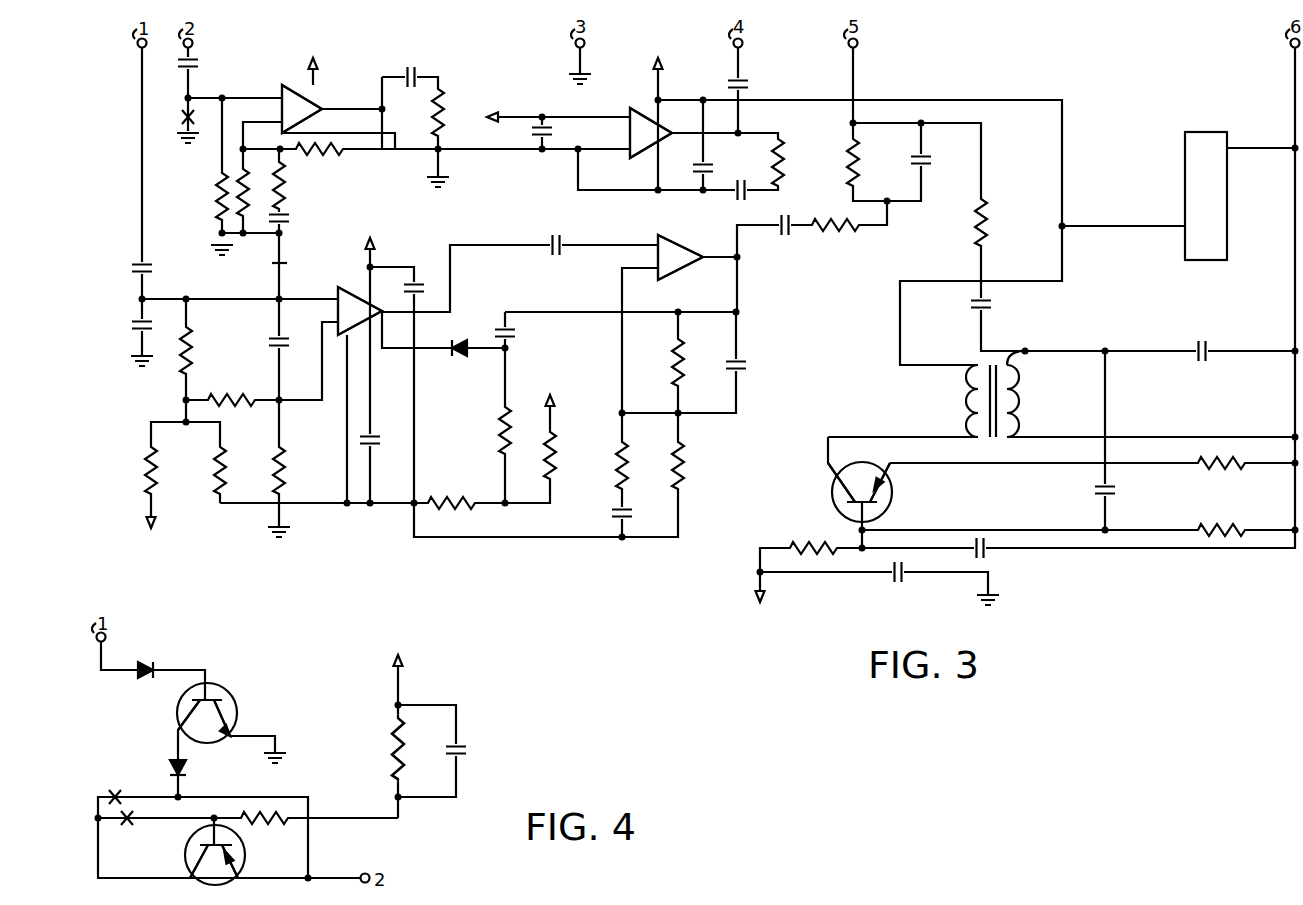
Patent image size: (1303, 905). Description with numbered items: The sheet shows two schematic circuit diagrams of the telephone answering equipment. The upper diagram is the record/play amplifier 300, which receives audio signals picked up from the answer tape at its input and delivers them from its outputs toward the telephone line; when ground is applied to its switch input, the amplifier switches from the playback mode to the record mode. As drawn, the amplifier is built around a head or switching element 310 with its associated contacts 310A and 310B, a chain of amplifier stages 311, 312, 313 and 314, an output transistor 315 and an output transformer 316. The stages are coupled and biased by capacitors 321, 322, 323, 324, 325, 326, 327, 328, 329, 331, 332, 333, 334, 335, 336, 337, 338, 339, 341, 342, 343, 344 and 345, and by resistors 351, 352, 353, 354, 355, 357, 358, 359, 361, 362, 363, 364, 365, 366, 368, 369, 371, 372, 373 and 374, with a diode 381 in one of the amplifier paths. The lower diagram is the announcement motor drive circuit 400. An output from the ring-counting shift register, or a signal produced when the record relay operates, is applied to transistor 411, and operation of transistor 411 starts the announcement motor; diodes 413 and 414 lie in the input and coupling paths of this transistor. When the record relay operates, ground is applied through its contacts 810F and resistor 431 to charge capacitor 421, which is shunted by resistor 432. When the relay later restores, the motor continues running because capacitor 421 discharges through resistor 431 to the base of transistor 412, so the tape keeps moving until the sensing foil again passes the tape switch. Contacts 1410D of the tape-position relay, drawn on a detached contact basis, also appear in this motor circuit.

In FIG. 3, the record/play amplifier 300 is at (927, 627).
In FIG. 3, the record/play head 310 is at (1192, 262).
In FIG. 3, the switch contact 310A is at (180, 113).
In FIG. 3, the switch contact 310B is at (283, 264).
In FIG. 3, the operational amplifier 311 is at (280, 85).
In FIG. 3, the operational amplifier 312 is at (336, 288).
In FIG. 3, the operational amplifier 313 is at (631, 109).
In FIG. 3, the operational amplifier 314 is at (669, 215).
In FIG. 3, the transistor 315 is at (887, 478).
In FIG. 3, the transformer 316 is at (980, 362).
In FIG. 3, the capacitor 321 is at (152, 267).
In FIG. 3, the capacitor 322 is at (152, 327).
In FIG. 3, the capacitor 323 is at (197, 63).
In FIG. 3, the capacitor 324 is at (289, 218).
In FIG. 3, the capacitor 325 is at (302, 330).
In FIG. 3, the capacitor 326 is at (425, 285).
In FIG. 3, the capacitor 327 is at (380, 437).
In FIG. 3, the capacitor 328 is at (420, 72).
In FIG. 3, the capacitor 329 is at (551, 130).
In FIG. 3, the capacitor 331 is at (512, 326).
In FIG. 3, the capacitor 332 is at (564, 240).
In FIG. 3, the capacitor 333 is at (612, 510).
In FIG. 3, the capacitor 334 is at (747, 81).
In FIG. 3, the capacitor 335 is at (710, 160).
In FIG. 3, the capacitor 336 is at (748, 195).
In FIG. 3, the capacitor 337 is at (783, 233).
In FIG. 3, the capacitor 338 is at (731, 355).
In FIG. 3, the capacitor 339 is at (924, 150).
In FIG. 3, the capacitor 341 is at (990, 300).
In FIG. 3, the capacitor 342 is at (894, 580).
In FIG. 3, the capacitor 343 is at (984, 554).
In FIG. 3, the capacitor 344 is at (1116, 486).
In FIG. 3, the capacitor 345 is at (1200, 358).
In FIG. 3, the resistor 351 is at (285, 448).
In FIG. 3, the resistor 352 is at (209, 350).
In FIG. 3, the resistor 353 is at (217, 395).
In FIG. 3, the resistor 354 is at (159, 460).
In FIG. 3, the resistor 355 is at (227, 453).
In FIG. 3, the resistor 357 is at (286, 178).
In FIG. 3, the resistor 358 is at (336, 153).
In FIG. 3, the resistor 359 is at (446, 104).
In FIG. 3, the resistor 361 is at (440, 497).
In FIG. 3, the resistor 362 is at (784, 150).
In FIG. 3, the resistor 363 is at (557, 447).
In FIG. 3, the resistor 364 is at (613, 462).
In FIG. 3, the resistor 365 is at (670, 372).
In FIG. 3, the resistor 366 is at (686, 462).
In FIG. 3, the resistor 368 is at (845, 232).
In FIG. 3, the resistor 369 is at (858, 145).
In FIG. 3, the resistor 371 is at (828, 535).
In FIG. 3, the resistor 372 is at (972, 218).
In FIG. 3, the resistor 373 is at (1218, 470).
In FIG. 3, the resistor 374 is at (1222, 524).
In FIG. 3, the diode 381 is at (462, 338).
In FIG. 4, the announcement motor drive circuit 400 is at (578, 792).
In FIG. 4, the transistor 411 is at (236, 700).
In FIG. 4, the transistor 412 is at (186, 857).
In FIG. 4, the diode 413 is at (144, 660).
In FIG. 4, the diode 414 is at (186, 765).
In FIG. 4, the capacitor 421 is at (462, 746).
In FIG. 4, the resistor 431 is at (258, 826).
In FIG. 4, the resistor 432 is at (395, 748).
In FIG. 4, the relay contact 1410D is at (140, 770).
In FIG. 4, the relay contacts 810F is at (127, 824).